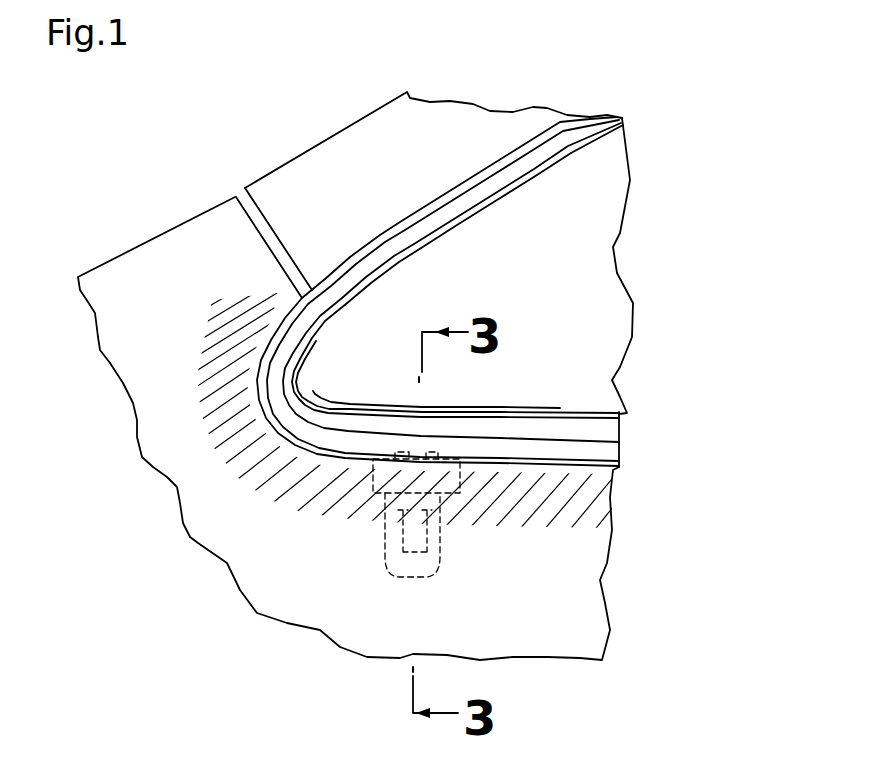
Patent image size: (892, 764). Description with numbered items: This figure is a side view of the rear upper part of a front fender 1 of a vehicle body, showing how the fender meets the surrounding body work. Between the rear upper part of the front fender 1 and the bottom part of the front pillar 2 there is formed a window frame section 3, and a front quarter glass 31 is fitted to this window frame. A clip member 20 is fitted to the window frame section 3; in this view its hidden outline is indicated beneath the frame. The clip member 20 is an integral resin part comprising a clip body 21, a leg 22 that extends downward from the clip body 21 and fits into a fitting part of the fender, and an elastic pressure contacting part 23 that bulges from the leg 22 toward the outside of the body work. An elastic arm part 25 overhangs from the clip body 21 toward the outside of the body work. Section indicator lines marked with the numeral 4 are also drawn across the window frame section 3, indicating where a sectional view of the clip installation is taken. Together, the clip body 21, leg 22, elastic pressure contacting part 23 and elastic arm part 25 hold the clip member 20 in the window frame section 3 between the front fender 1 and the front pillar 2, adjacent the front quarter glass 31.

The front fender 1 is at (212, 528).
The front pillar 2 is at (330, 170).
The window frame section 3 is at (513, 478).
The section line 4 is at (397, 399).
The clip member 20 is at (441, 552).
The clip body 21 is at (460, 477).
The leg 22 is at (385, 542).
The elastic pressure contacting part 23 is at (413, 552).
The elastic arm part 25 is at (376, 477).
The front quarter glass 31 is at (593, 257).